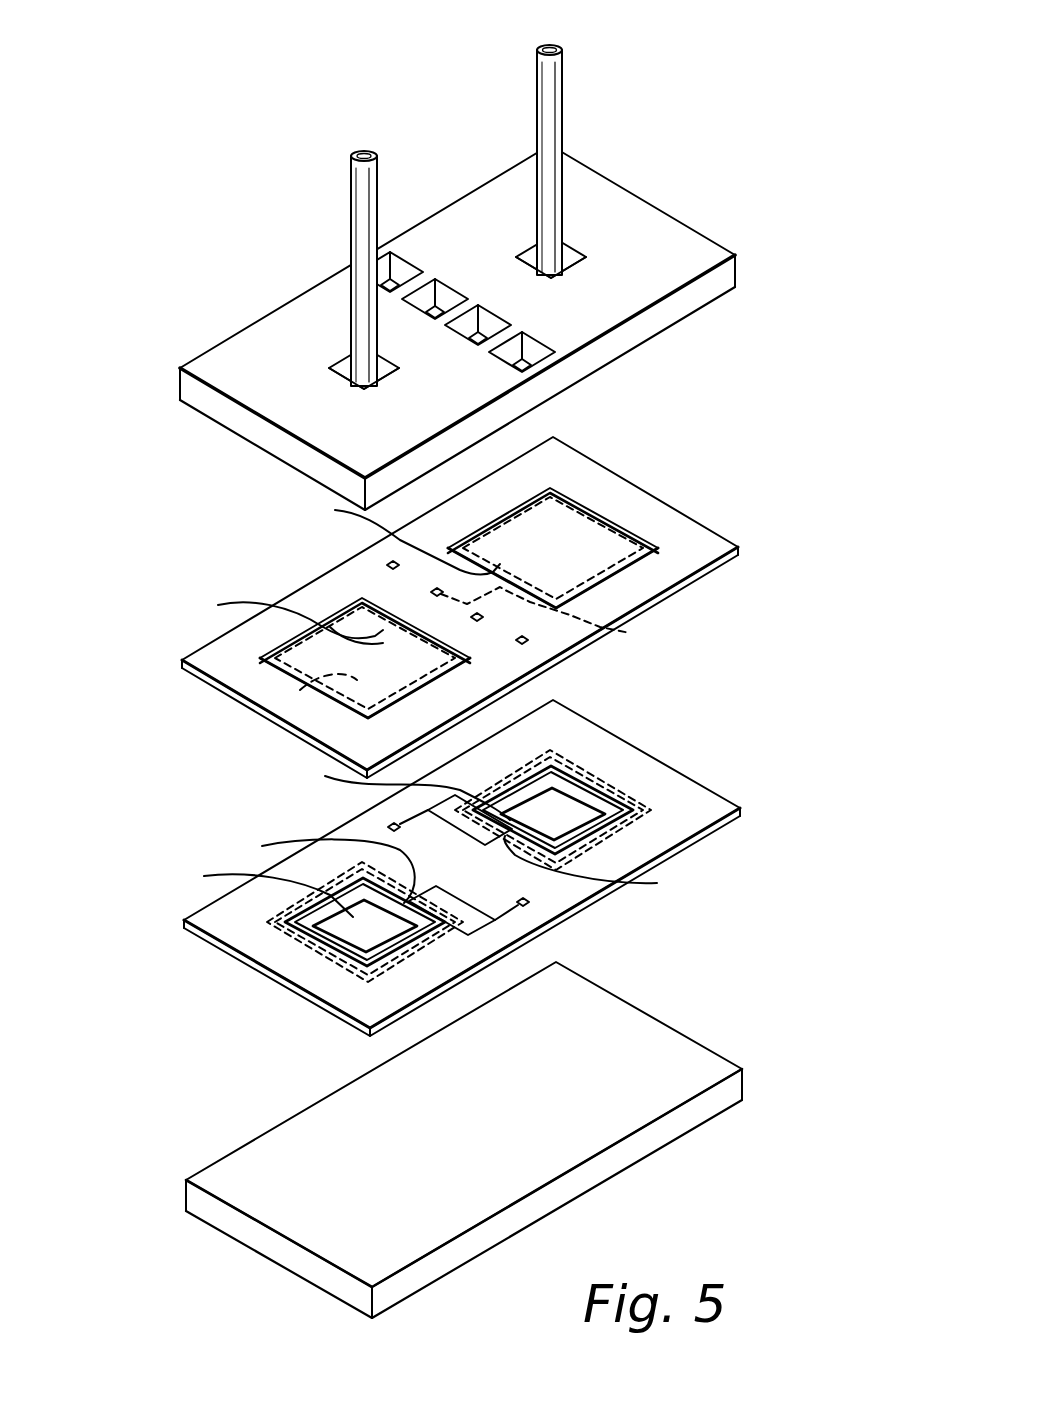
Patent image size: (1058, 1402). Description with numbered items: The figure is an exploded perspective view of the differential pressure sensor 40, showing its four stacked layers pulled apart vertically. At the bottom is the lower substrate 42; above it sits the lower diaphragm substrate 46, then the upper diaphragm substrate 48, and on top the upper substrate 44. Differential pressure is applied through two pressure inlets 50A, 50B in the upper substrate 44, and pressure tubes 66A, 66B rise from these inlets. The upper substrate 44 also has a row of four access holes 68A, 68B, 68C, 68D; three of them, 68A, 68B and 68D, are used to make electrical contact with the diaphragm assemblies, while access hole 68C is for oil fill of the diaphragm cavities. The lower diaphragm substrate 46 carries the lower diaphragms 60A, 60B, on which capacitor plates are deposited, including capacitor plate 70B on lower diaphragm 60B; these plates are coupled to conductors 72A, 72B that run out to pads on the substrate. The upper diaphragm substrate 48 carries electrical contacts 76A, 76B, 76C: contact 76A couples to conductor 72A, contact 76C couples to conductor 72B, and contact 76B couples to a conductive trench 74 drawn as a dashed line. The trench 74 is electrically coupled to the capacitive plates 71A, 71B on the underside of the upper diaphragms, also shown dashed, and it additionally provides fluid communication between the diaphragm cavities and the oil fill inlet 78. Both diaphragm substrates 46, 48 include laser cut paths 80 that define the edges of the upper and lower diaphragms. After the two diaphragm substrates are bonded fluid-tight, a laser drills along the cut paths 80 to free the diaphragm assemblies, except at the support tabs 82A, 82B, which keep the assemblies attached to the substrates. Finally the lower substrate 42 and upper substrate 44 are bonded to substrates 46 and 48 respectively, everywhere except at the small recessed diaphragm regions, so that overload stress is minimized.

The differential pressure sensor 40 is at (766, 104).
The lower substrate 42 is at (657, 1018).
The upper substrate 44 is at (736, 256).
The lower diaphragm substrate 46 is at (742, 808).
The upper diaphragm substrate 48 is at (697, 527).
The pressure inlet 50A is at (344, 362).
The pressure inlet 50B is at (563, 246).
The lower diaphragm 60A is at (309, 938).
The lower diaphragm 60B is at (585, 800).
The pressure tube 66A is at (350, 207).
The pressure tube 66B is at (551, 73).
The access hole 68A is at (409, 264).
The access hole 68B is at (438, 253).
The access hole 68C is at (494, 312).
The access hole 68D is at (504, 357).
The capacitor plate 70B is at (556, 800).
The capacitive plate 71A is at (300, 690).
The capacitive plate 71B is at (565, 505).
The conductor 72A is at (392, 824).
The conductor 72B is at (473, 902).
The conductive trench 74 is at (559, 621).
The electrical contact 76A is at (391, 563).
The electrical contact 76B is at (433, 592).
The electrical contact 76C is at (528, 641).
The oil fill inlet 78 is at (479, 621).
The laser cut path 80 is at (278, 663).
The support tab 82A is at (285, 744).
The support tab 82B is at (496, 699).